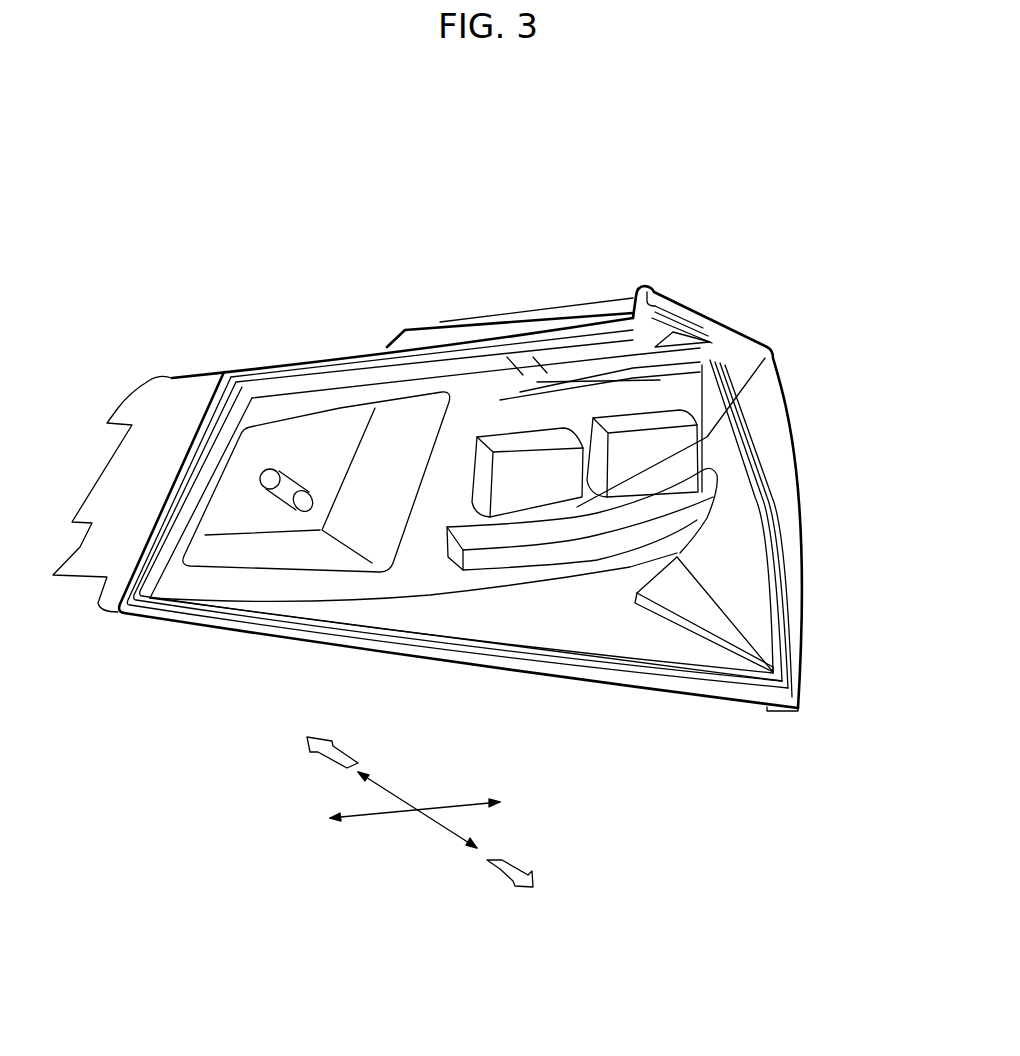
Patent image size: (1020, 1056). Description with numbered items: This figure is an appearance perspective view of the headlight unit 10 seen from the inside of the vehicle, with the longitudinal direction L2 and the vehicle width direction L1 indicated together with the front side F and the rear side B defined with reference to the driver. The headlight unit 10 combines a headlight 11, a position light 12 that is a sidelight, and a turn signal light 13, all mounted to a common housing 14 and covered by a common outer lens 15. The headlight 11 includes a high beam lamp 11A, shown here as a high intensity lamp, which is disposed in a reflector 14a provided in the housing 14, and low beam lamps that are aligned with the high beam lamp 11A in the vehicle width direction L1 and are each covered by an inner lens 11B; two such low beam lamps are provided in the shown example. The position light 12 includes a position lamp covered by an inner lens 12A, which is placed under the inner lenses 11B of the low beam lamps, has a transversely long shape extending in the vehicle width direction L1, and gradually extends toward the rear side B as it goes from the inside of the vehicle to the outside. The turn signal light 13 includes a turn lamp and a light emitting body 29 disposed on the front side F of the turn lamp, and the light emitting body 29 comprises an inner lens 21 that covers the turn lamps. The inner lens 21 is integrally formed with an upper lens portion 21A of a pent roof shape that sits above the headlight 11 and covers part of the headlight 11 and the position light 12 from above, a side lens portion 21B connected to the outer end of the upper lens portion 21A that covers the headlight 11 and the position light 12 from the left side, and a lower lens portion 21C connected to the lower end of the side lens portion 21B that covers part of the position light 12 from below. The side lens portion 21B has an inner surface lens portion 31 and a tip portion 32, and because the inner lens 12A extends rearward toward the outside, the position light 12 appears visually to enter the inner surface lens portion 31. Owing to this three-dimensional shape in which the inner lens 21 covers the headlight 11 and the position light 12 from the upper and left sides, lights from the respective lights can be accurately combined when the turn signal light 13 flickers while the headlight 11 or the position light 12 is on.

The headlight unit 10 is at (699, 205).
The headlight 11 is at (232, 558).
The high beam lamp 11A is at (272, 508).
The inner lens 11B is at (522, 463).
The position light 12 is at (582, 519).
The inner lens 12A is at (731, 508).
The turn signal light 13 is at (722, 330).
The housing 14 is at (174, 368).
The reflector 14a is at (340, 557).
The outer lens 15 is at (777, 403).
The inner lens 21 is at (745, 366).
The light emitting body 29 is at (460, 498).
The upper lens portion 21A is at (548, 340).
The side lens portion 21B is at (776, 438).
The lower lens portion 21C is at (773, 645).
The inner surface lens portion 31 is at (747, 583).
The tip portion 32 is at (773, 580).
The rear side B is at (348, 757).
The front side F is at (520, 866).
The vehicle width direction L1 is at (394, 812).
The longitudinal direction L2 is at (404, 803).